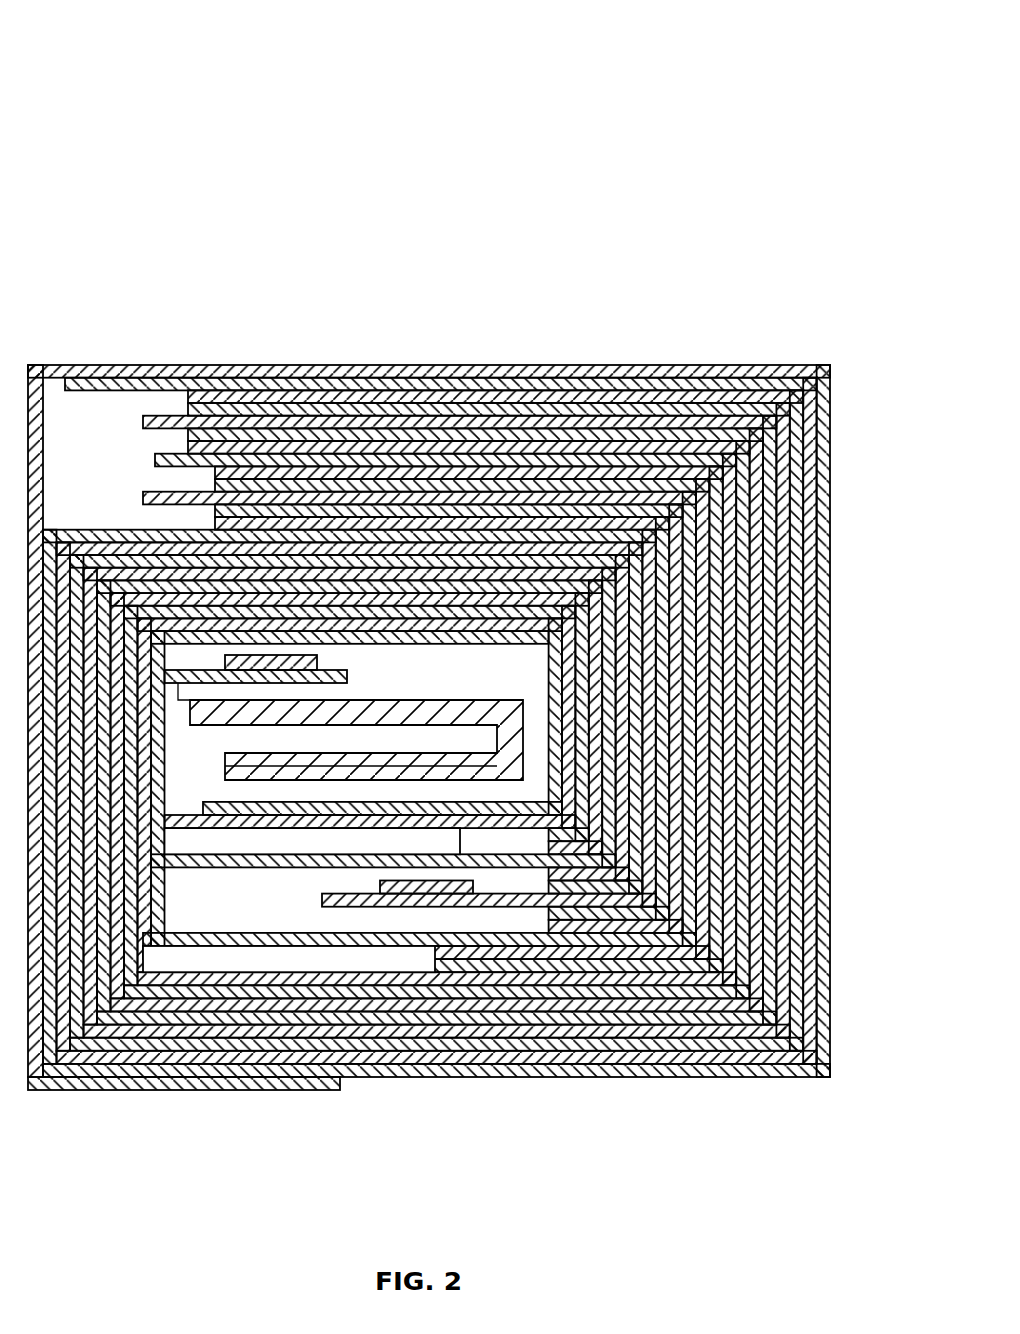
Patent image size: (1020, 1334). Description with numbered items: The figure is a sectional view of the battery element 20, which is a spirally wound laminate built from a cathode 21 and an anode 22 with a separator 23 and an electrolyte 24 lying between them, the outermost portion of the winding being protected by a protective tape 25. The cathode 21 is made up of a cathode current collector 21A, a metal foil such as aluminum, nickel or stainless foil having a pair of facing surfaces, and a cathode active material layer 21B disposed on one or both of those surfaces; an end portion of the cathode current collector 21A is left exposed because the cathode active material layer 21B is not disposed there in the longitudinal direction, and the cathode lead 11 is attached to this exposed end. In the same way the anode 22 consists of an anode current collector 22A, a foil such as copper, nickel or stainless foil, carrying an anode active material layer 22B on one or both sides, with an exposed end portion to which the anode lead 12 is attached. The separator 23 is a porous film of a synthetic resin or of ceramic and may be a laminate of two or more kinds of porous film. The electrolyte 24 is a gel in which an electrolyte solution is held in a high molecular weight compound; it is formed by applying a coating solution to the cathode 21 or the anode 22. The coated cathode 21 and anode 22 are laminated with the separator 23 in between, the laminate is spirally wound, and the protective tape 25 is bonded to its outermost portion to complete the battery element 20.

The battery element 20 is at (657, 129).
The cathode 21 is at (265, 238).
The cathode current collector 21A is at (178, 458).
The cathode active material layer 21B is at (250, 462).
The anode 22 is at (528, 238).
The anode current collector 22A is at (370, 386).
The anode active material layer 22B is at (497, 522).
The separator 23 is at (556, 500).
The electrolyte 24 is at (665, 507).
The protective tape 25 is at (781, 372).
The cathode lead 11 is at (247, 665).
The anode lead 12 is at (424, 888).